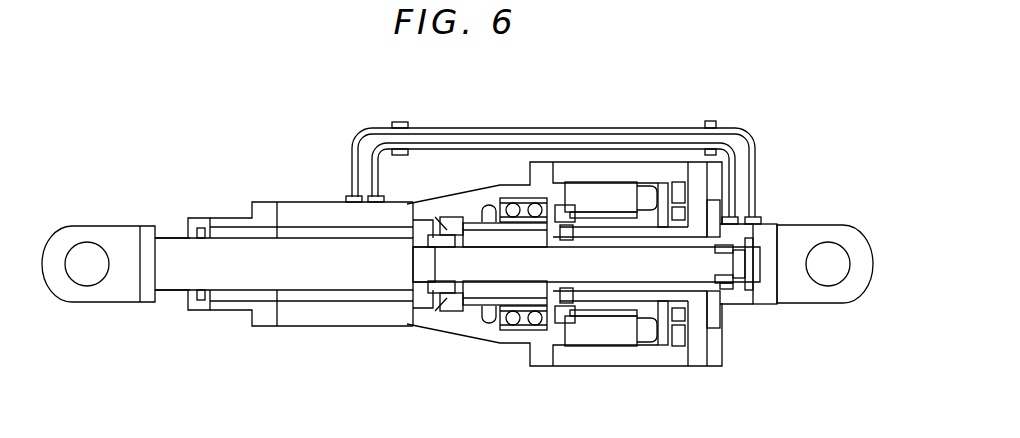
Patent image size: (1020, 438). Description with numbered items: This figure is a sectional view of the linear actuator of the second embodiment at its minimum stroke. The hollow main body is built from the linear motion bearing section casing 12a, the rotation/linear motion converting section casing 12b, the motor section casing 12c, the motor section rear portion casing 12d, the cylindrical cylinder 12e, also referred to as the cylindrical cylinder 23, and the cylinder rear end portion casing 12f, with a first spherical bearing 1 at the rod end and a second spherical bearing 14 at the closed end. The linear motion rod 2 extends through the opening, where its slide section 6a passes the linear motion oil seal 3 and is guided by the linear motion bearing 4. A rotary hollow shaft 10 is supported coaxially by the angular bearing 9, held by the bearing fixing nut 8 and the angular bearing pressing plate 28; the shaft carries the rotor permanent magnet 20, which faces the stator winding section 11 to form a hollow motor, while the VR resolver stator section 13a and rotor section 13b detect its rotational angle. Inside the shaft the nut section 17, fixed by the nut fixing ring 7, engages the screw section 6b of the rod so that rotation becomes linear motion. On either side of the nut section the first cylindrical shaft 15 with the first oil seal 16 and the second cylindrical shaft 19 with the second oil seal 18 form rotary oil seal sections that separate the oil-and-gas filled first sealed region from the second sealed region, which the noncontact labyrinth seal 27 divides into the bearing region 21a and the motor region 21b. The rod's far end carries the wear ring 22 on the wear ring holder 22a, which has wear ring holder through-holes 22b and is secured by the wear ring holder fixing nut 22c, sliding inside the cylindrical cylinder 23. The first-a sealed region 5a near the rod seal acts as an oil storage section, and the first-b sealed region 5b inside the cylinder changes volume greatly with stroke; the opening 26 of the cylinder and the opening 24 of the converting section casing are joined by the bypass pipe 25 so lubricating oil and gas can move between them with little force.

The first spherical bearing 1 is at (93, 236).
The linear motion rod 2 is at (171, 228).
The linear motion oil seal 3 is at (203, 312).
The linear motion bearing 4 is at (263, 302).
The first-a sealed region 5a is at (311, 226).
The first-b sealed region 5b is at (754, 268).
The slide section 6a is at (240, 248).
The screw section 6b is at (440, 283).
The nut fixing ring 7 is at (437, 217).
The bearing fixing nut 8 is at (475, 218).
The angular bearing 9 is at (520, 331).
The rotary hollow shaft 10 is at (562, 324).
The stator winding section 11 is at (612, 185).
The linear motion bearing section casing 12a is at (263, 210).
The rotation/linear motion converting section casing 12b is at (315, 327).
The motor section casing 12c is at (648, 165).
The motor section rear portion casing 12d is at (700, 367).
The cylindrical cylinder 12e is at (714, 329).
The cylinder rear end portion casing 12f is at (765, 255).
The VR resolver stator section 13a is at (682, 190).
The VR resolver rotor section 13b is at (683, 212).
The second spherical bearing 14 is at (848, 240).
The first cylindrical shaft 15 is at (435, 312).
The first oil seal 16 is at (428, 283).
The nut section 17 is at (478, 306).
The second oil seal 18 is at (570, 304).
The second cylindrical shaft 19 is at (592, 317).
The rotor permanent magnet 20 is at (626, 347).
The bearing region 21a is at (468, 340).
The motor region 21b is at (679, 347).
The wear ring 22 is at (739, 280).
The wear ring holder 22a is at (724, 284).
The wear ring holder through-holes 22b is at (727, 290).
The wear ring holder fixing nut 22c is at (733, 284).
The cylindrical cylinder 23 is at (665, 203).
The opening 24 is at (370, 200).
The bypass pipe 25 is at (493, 133).
The opening 26 is at (762, 212).
The noncontact labyrinth seal 27 is at (566, 205).
The angular bearing pressing plate 28 is at (530, 198).